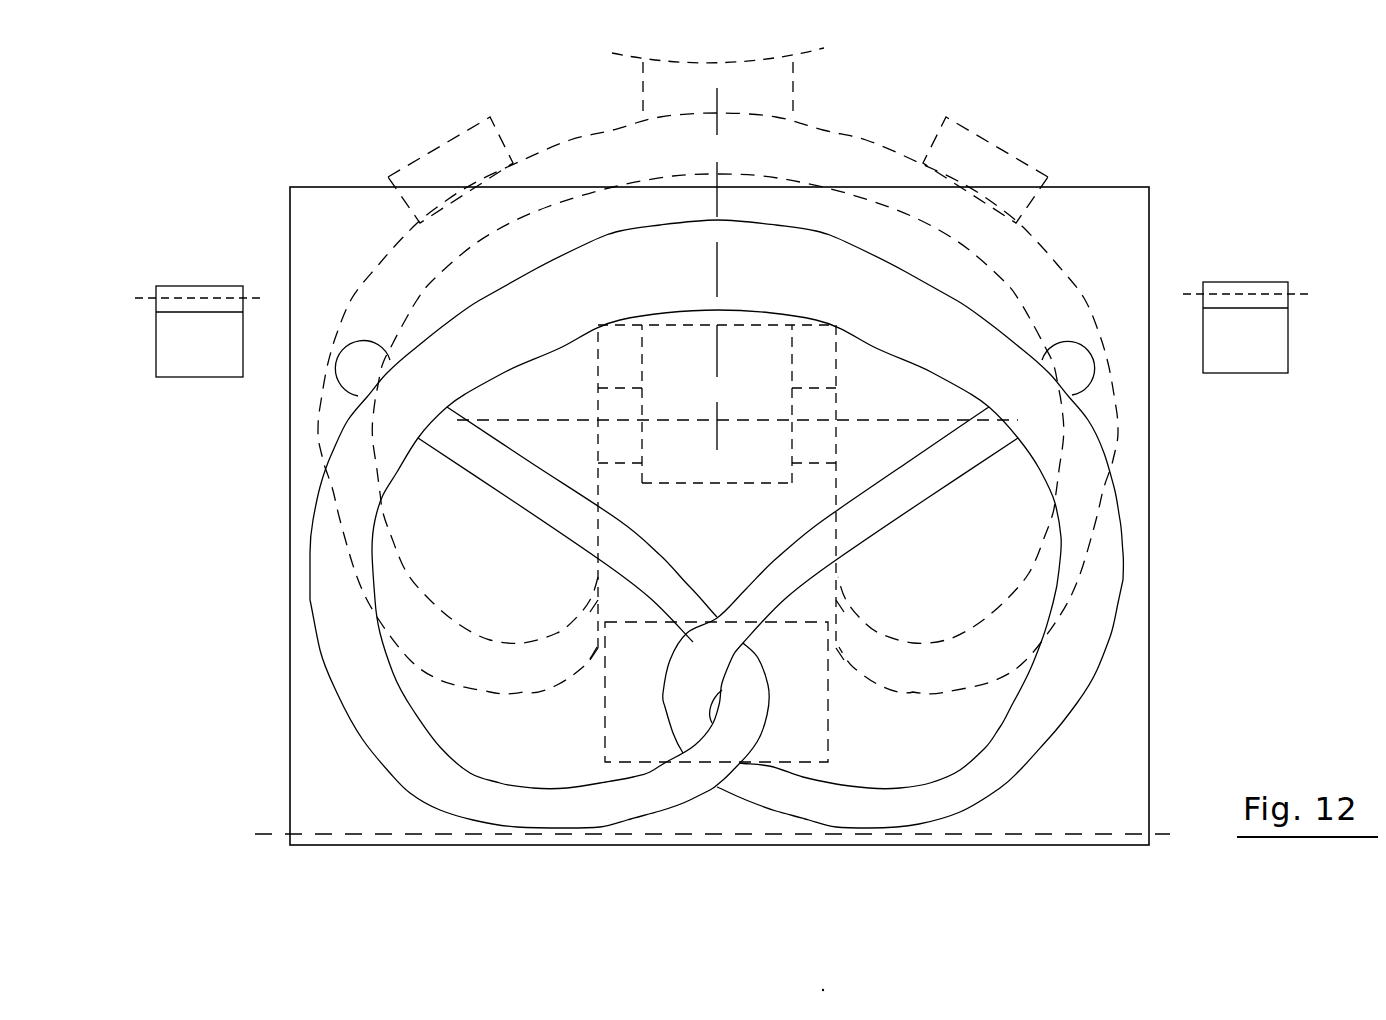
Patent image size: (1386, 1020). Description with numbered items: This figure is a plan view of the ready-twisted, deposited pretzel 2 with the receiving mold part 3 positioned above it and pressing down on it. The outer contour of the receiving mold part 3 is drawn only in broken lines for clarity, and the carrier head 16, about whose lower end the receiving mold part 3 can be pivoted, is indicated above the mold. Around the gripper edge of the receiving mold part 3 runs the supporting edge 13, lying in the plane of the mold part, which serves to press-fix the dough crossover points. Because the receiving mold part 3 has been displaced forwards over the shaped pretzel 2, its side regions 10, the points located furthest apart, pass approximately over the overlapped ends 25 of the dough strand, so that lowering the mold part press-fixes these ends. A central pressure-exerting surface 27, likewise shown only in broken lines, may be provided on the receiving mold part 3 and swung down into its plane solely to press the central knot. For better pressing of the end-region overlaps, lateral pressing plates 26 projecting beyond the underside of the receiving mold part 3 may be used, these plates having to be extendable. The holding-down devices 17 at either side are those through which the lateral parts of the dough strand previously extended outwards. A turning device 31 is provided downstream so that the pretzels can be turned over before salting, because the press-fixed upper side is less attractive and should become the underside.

The pretzel 2 is at (396, 743).
The receiving mold part 3 is at (598, 482).
The side region of the receiving mold part 10 is at (524, 270).
The supporting edge 13 is at (405, 278).
The carrier head 16 is at (695, 109).
The holding-down device 17 is at (211, 368).
The overlapped ends of the dough strand 25 is at (363, 357).
The lateral pressing plates 26 is at (470, 163).
The central pressure-exerting surface 27 is at (828, 713).
The turning device 31 is at (303, 765).